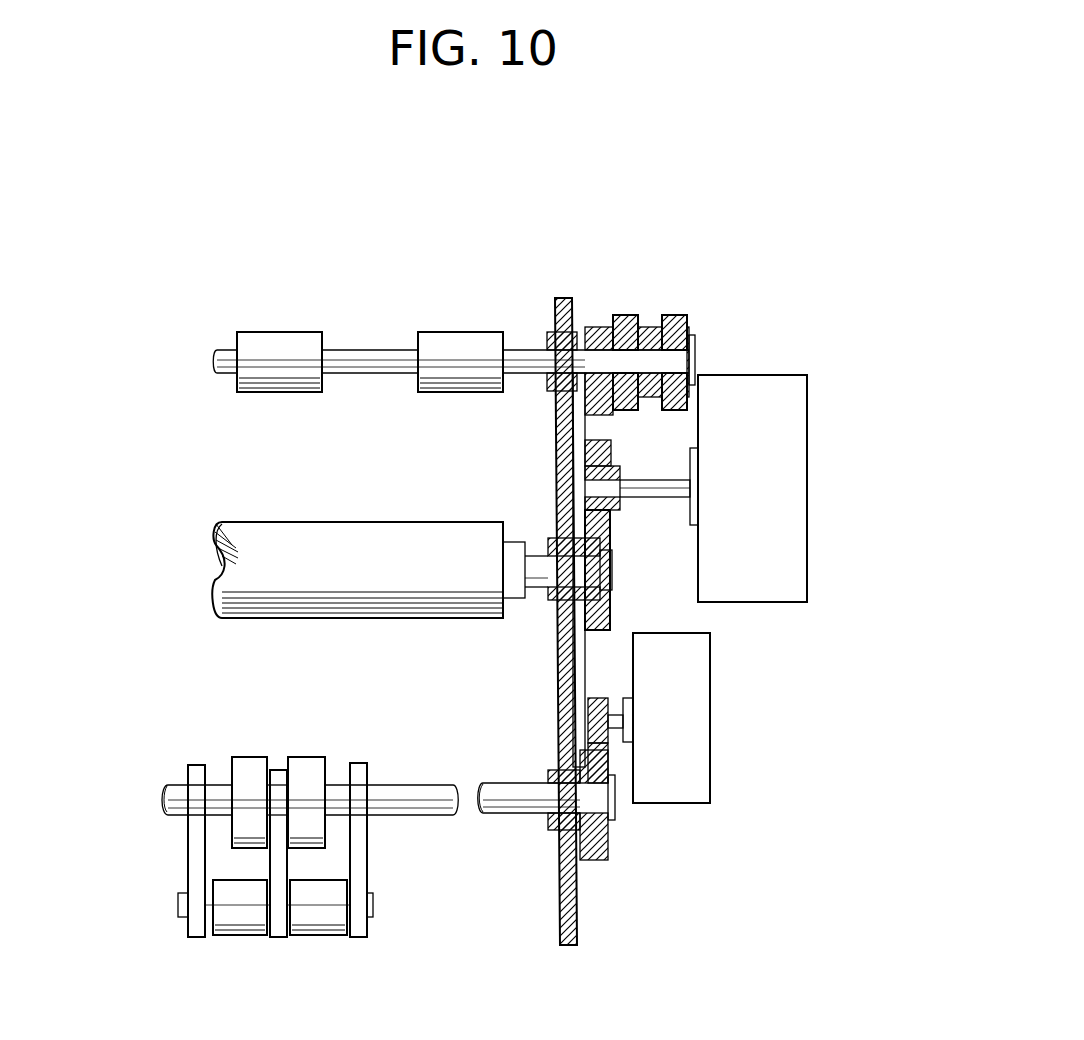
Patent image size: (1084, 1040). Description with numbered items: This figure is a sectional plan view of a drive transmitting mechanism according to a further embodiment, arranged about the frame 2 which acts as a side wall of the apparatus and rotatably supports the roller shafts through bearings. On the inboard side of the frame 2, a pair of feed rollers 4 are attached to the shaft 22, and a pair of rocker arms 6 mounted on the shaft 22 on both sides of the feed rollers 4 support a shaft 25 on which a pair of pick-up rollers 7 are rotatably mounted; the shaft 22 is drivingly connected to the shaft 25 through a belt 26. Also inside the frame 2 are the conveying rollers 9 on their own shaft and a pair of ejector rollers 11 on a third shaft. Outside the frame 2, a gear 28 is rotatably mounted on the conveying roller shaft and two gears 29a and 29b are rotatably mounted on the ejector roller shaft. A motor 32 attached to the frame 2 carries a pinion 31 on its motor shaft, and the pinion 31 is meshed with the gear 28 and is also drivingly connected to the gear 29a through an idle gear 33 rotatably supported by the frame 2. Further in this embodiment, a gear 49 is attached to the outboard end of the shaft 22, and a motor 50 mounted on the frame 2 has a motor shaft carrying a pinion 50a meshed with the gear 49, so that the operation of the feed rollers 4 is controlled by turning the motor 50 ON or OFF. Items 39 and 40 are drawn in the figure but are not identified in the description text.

The frame 2 is at (572, 945).
The feed rollers 4 is at (308, 757).
The rocker arms 6 is at (357, 763).
The pick-up rollers 7 is at (328, 937).
The conveying rollers 9 is at (393, 522).
The ejector rollers 11 is at (287, 332).
The shaft 22 is at (510, 815).
The shaft 25 is at (377, 900).
The belt 26 is at (278, 937).
The gear 28 is at (610, 610).
The gear 29a is at (592, 327).
The gear 29b is at (655, 322).
The pinion 31 is at (615, 510).
The motor 32 is at (808, 455).
The idle gear 33 is at (620, 470).
The bearing 39 is at (603, 540).
The gear 40 is at (630, 330).
The gear 49 is at (608, 835).
The motor 50 is at (712, 722).
The pinion 50a is at (598, 698).